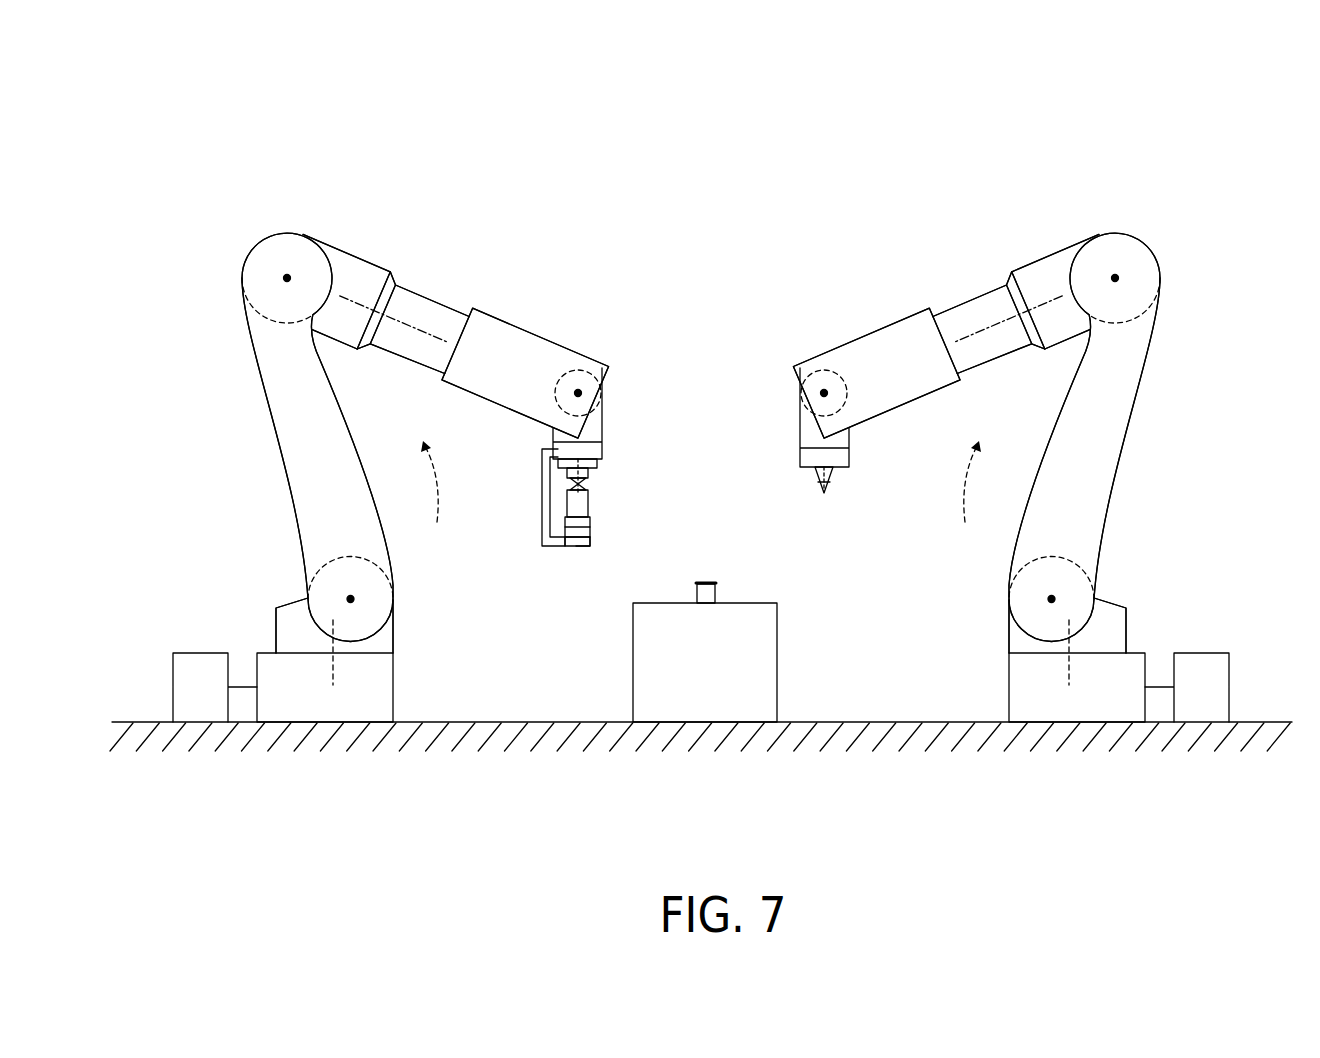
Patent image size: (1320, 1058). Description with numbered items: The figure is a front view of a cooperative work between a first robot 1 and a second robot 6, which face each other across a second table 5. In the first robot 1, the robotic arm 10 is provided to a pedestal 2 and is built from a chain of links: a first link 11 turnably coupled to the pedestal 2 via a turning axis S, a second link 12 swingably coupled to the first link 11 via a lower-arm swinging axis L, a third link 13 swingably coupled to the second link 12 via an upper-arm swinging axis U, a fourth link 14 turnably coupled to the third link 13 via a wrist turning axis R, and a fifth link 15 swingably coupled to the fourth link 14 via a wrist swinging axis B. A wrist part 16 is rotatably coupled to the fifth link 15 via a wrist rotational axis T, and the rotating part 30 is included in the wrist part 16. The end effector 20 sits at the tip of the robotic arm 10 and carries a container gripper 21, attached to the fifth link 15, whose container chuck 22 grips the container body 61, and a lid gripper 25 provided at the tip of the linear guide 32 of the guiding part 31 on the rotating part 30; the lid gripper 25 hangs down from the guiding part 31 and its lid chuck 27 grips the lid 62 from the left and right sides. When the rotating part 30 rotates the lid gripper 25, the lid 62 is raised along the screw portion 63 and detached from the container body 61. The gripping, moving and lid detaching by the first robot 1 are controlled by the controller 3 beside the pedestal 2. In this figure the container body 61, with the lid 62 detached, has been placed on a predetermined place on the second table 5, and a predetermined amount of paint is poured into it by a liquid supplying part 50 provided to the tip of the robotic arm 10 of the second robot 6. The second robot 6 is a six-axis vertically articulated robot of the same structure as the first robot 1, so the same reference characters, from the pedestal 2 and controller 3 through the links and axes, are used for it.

The first robot 1 is at (212, 160).
The second robot 6 is at (1213, 155).
The pedestal 2 is at (305, 712).
The controller 3 is at (192, 724).
The second table 5 is at (765, 690).
The robotic arm 10 is at (701, 481).
The first link 11 is at (290, 613).
The second link 12 is at (303, 475).
The third link 13 is at (372, 286).
The fourth link 14 is at (512, 332).
The fifth link 15 is at (600, 428).
The wrist part 16 is at (577, 473).
The end effector 20 is at (753, 793).
The container gripper 21 is at (548, 549).
The container chuck 22 is at (571, 549).
The lid gripper 25 is at (589, 504).
The lid chuck 27 is at (598, 523).
The rotating part 30 is at (602, 455).
The guiding part 31 is at (586, 482).
The linear guide 32 is at (588, 488).
The liquid supplying part 50 is at (818, 483).
The container body 61 is at (716, 598).
The lid 62 is at (585, 549).
The screw portion 63 is at (712, 584).
The turning axis S is at (340, 670).
The lower-arm swinging axis L is at (355, 600).
The upper-arm swinging axis U is at (289, 278).
The wrist turning axis R is at (438, 320).
The wrist swinging axis B is at (580, 392).
The wrist rotational axis T is at (594, 467).